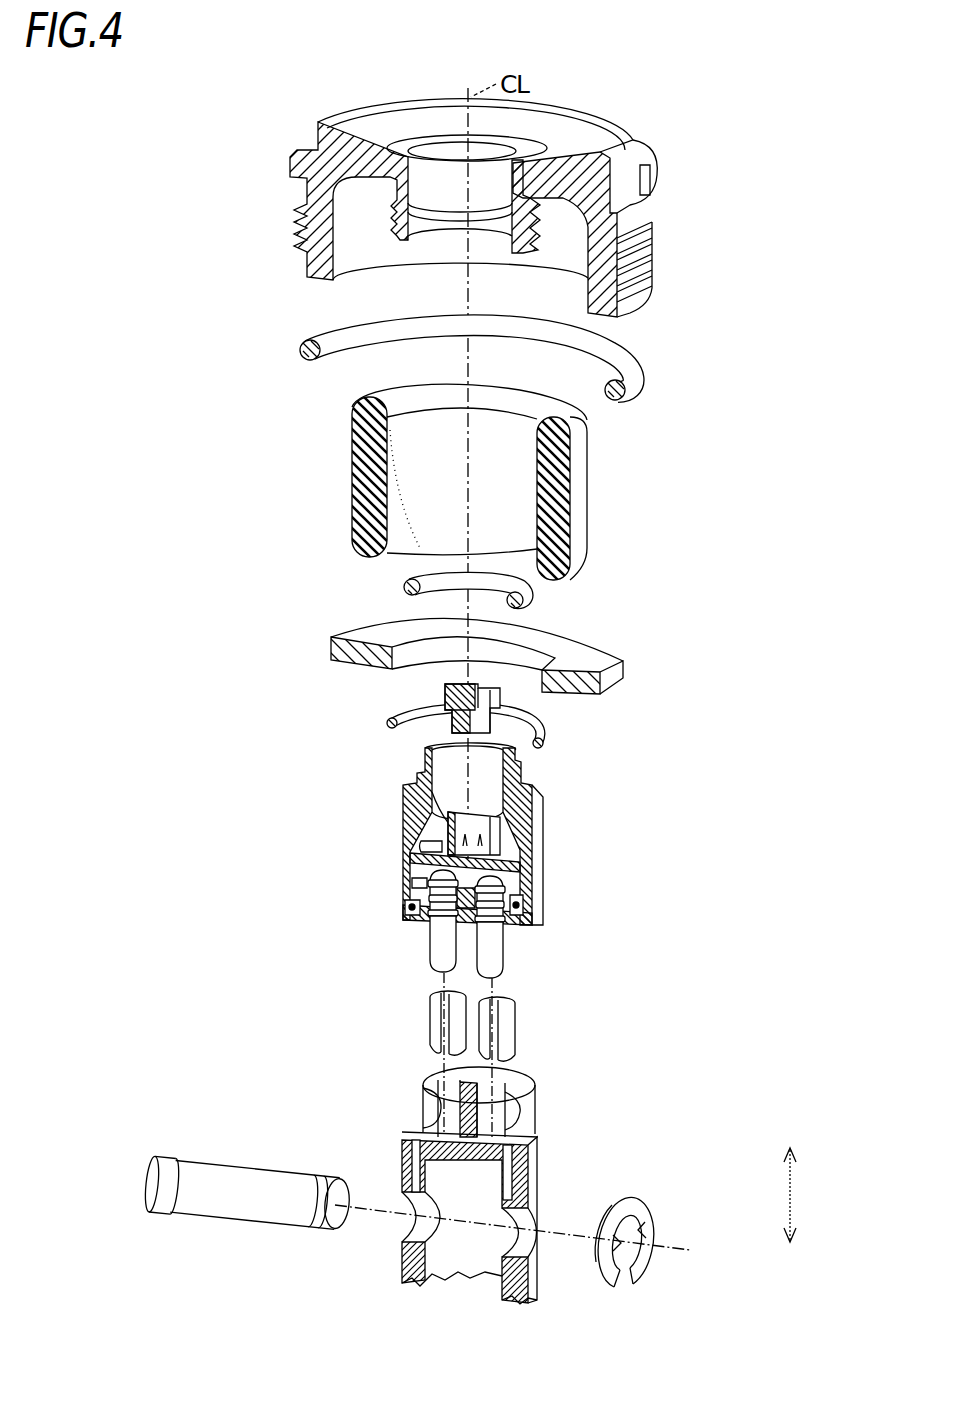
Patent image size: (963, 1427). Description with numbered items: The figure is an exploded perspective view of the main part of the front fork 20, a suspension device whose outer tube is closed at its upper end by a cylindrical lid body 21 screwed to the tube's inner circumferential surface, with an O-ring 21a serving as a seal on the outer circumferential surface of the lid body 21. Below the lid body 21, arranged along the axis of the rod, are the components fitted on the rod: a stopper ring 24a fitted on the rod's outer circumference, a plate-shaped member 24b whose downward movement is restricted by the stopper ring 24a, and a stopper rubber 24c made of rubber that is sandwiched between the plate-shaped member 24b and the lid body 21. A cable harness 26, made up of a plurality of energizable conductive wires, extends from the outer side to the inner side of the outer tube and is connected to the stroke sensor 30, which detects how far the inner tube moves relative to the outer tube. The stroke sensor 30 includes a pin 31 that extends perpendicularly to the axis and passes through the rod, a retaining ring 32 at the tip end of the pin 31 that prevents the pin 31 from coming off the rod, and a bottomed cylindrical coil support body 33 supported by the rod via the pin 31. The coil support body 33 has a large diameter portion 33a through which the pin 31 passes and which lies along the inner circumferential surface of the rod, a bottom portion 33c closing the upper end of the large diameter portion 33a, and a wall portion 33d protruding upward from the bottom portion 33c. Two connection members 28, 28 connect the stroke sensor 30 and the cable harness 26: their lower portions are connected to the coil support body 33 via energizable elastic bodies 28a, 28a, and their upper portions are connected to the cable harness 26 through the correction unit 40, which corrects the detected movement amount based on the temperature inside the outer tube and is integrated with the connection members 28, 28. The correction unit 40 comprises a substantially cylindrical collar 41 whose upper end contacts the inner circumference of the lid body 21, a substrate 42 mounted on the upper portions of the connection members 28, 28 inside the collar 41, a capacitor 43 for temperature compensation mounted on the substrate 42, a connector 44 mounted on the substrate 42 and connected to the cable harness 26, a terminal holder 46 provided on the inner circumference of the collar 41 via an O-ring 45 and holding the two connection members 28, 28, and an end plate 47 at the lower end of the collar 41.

The front fork 20 is at (212, 209).
The lid body 21 is at (647, 168).
The O-ring 21a is at (645, 362).
The stopper ring 24a is at (553, 735).
The plate-shaped member 24b is at (595, 657).
The stopper rubber 24c is at (588, 492).
The cable harness 26 is at (443, 693).
The connection member 28 is at (438, 938).
The elastic body 28a is at (428, 1022).
The stroke sensor 30 is at (650, 1103).
The pin 31 is at (248, 1183).
The retaining ring 32 is at (655, 1208).
The coil support body 33 is at (524, 1168).
The large diameter portion 33a is at (533, 1182).
The bottom portion 33c is at (525, 1137).
The wall portion 33d is at (517, 1075).
The correction unit 40 is at (570, 798).
The collar 41 is at (542, 828).
The substrate 42 is at (512, 857).
The capacitor 43 is at (413, 830).
The connector 44 is at (417, 782).
The O-ring 45 is at (533, 912).
The terminal holder 46 is at (412, 875).
The end plate 47 is at (418, 917).